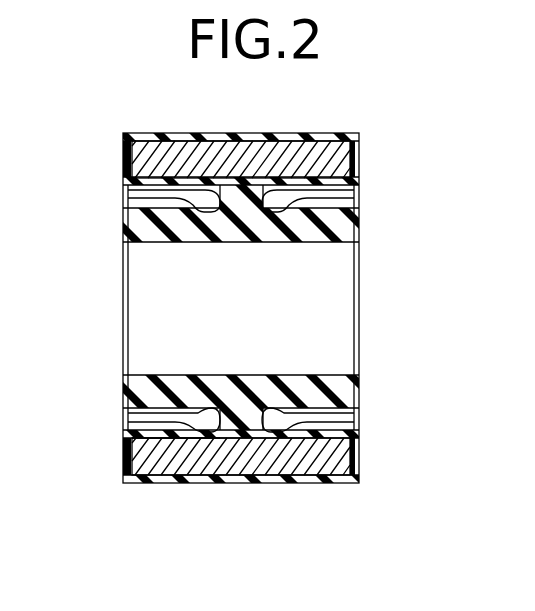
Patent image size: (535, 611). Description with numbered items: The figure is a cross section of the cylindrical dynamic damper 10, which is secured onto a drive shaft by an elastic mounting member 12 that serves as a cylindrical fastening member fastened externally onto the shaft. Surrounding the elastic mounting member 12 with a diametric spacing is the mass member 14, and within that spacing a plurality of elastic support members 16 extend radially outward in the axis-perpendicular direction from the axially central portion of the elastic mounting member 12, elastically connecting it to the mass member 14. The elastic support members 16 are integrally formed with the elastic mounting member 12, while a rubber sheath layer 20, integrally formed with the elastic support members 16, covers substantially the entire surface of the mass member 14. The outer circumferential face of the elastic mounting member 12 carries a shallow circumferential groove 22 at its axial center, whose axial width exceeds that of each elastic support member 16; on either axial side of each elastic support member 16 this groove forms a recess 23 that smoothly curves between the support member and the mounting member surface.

The dynamic damper 10 is at (400, 111).
The elastic mounting member 12 is at (347, 393).
The mass member 14 is at (268, 156).
The elastic support member 16 is at (350, 157).
The rubber sheath layer 20 is at (285, 484).
The circumferential groove 22 is at (207, 443).
The recess 23 is at (127, 190).